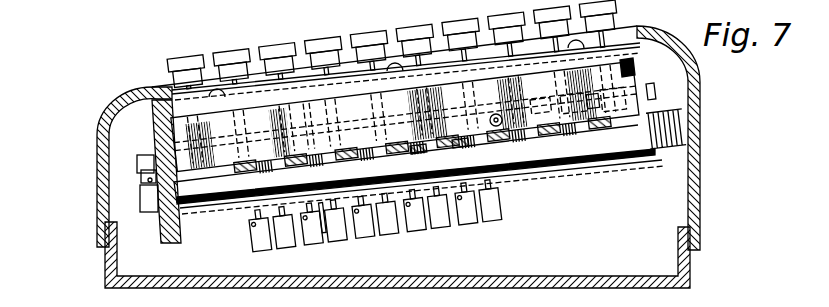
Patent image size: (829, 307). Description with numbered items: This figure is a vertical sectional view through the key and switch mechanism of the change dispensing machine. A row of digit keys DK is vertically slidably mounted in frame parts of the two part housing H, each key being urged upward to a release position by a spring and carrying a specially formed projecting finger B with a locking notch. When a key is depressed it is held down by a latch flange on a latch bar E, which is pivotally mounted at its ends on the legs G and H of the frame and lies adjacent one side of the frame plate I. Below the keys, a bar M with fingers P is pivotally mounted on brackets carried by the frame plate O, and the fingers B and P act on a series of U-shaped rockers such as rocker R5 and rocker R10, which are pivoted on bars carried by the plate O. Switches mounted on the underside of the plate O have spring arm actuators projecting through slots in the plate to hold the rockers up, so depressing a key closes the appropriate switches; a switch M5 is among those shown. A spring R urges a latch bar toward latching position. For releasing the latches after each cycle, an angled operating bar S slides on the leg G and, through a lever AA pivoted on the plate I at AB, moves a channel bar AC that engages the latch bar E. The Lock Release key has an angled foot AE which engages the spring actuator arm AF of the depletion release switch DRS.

The leg G is at (655, 57).
The digit key DK is at (171, 65).
The housing H is at (150, 121).
The angled foot AE is at (141, 157).
The spring actuator arm AF is at (141, 177).
The depletion release switch DRS is at (146, 206).
The latch bar E is at (405, 116).
The frame plate I is at (309, 126).
The bar M is at (310, 172).
The projecting finger B is at (406, 164).
The rocker R10 is at (248, 196).
The frame plate O is at (588, 170).
The finger P is at (418, 153).
The spring R is at (498, 128).
The channel bar AC is at (548, 124).
The pivot AB is at (603, 122).
The lever AA is at (628, 120).
The operating bar S is at (655, 92).
The rocker R5 is at (672, 122).
The rod M5 is at (316, 230).